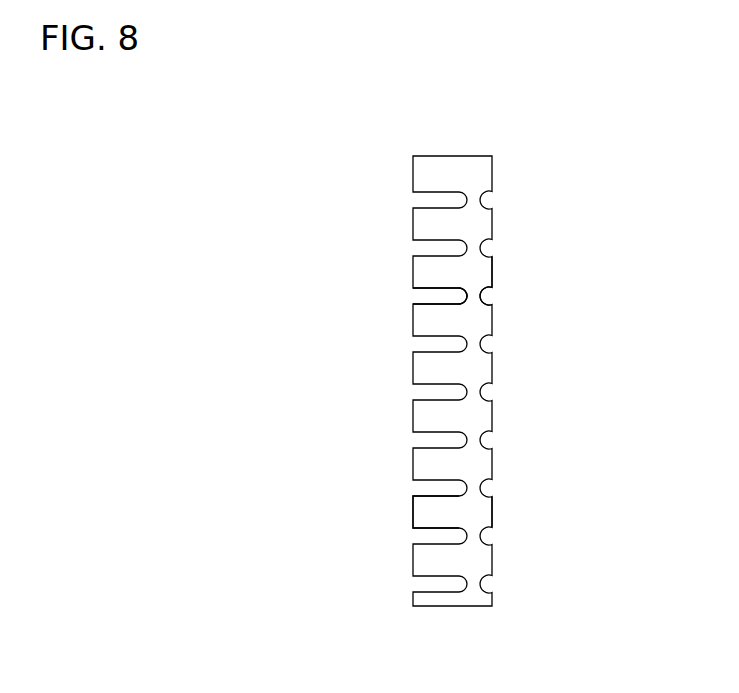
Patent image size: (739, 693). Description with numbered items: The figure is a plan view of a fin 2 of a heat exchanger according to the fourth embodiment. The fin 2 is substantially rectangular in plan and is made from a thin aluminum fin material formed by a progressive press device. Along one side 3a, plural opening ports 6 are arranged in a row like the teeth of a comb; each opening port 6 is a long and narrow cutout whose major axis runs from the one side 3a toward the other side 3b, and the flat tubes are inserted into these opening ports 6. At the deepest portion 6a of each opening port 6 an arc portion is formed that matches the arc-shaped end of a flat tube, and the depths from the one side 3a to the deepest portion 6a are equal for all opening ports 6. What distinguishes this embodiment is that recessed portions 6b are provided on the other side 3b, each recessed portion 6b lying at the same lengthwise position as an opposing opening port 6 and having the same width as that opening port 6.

The fin 2 is at (470, 412).
The one side 3a is at (410, 507).
The other side 3b is at (492, 508).
The opening port 6 is at (425, 292).
The deepest portion 6a is at (470, 297).
The recessed portion 6b is at (493, 293).